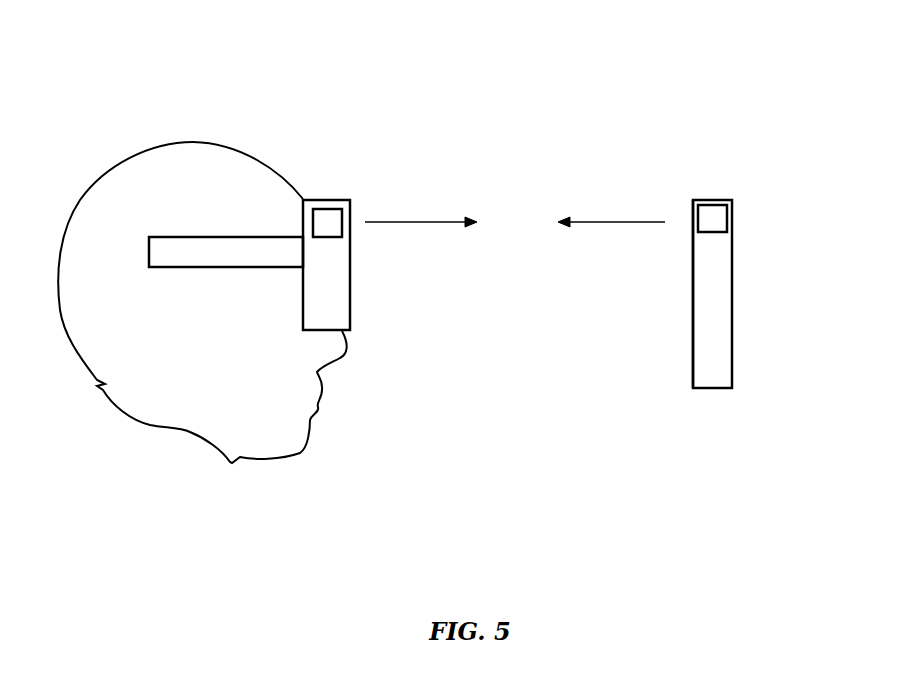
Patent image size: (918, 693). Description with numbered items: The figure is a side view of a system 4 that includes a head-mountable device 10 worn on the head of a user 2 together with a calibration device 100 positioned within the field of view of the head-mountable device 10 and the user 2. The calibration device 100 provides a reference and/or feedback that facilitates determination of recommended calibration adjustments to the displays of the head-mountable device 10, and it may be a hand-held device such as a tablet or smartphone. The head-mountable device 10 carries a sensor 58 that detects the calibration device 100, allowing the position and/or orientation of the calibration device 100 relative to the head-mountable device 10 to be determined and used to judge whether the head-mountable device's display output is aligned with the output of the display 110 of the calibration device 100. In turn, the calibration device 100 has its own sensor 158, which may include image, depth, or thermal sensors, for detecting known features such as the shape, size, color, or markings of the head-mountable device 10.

The user 2 is at (150, 160).
The system 4 is at (430, 118).
The head-mountable device 10 is at (317, 199).
The sensor 58 is at (330, 220).
The calibration device 100 is at (698, 198).
The display 110 is at (693, 218).
The sensor 158 is at (717, 217).